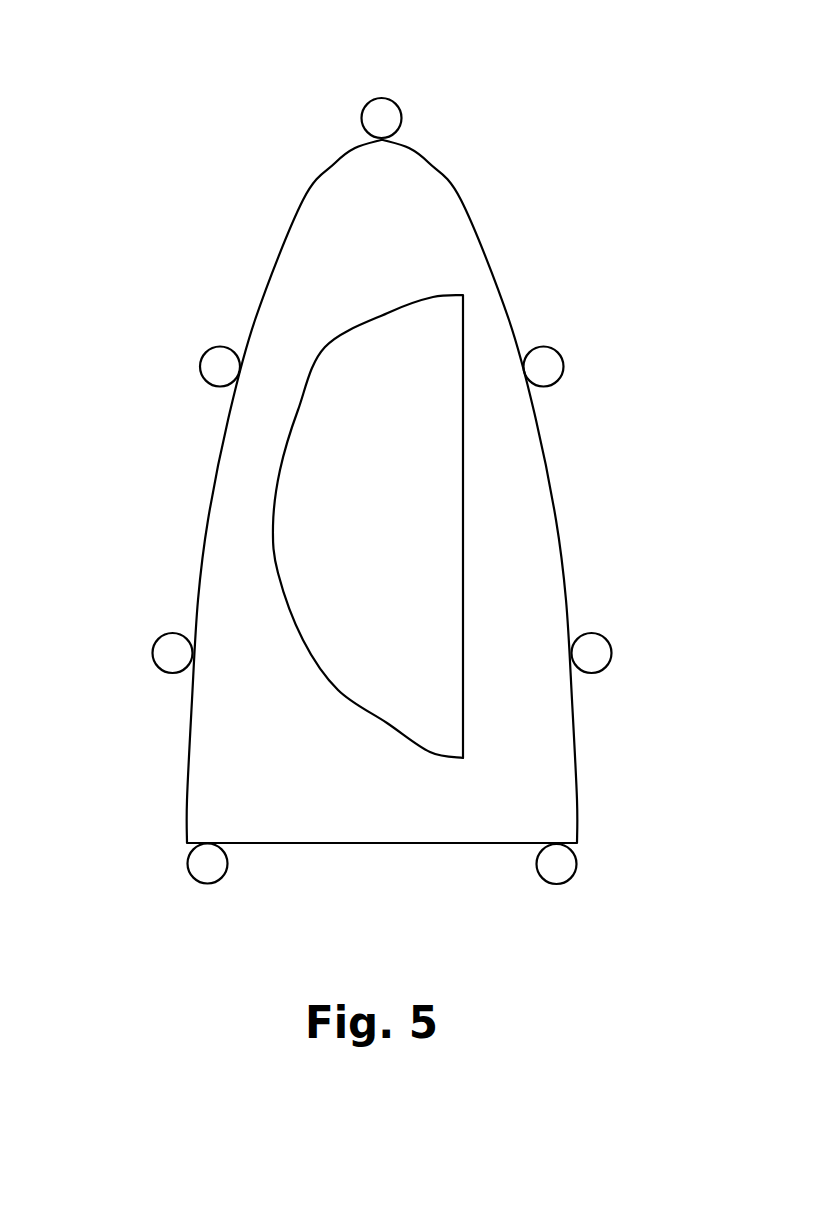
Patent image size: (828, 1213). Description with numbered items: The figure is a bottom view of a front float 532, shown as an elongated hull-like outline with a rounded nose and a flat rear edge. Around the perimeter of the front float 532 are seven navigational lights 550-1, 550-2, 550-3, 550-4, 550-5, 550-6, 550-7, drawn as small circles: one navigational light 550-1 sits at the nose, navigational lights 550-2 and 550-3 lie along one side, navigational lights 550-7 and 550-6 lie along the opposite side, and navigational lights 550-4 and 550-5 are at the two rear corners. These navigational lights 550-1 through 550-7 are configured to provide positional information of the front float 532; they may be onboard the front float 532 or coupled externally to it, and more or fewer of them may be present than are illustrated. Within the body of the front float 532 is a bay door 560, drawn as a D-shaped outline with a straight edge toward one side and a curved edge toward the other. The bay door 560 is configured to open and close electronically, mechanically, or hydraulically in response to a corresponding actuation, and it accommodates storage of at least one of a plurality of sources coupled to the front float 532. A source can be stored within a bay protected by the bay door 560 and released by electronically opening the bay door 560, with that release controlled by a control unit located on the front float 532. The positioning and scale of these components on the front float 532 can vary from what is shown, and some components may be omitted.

The front float 532 is at (591, 134).
The bay door 560 is at (464, 525).
The navigational light 550-1 is at (381, 98).
The navigational light 550-2 is at (564, 366).
The navigational light 550-3 is at (612, 652).
The navigational light 550-4 is at (557, 884).
The navigational light 550-5 is at (208, 884).
The navigational light 550-6 is at (152, 653).
The navigational light 550-7 is at (200, 366).